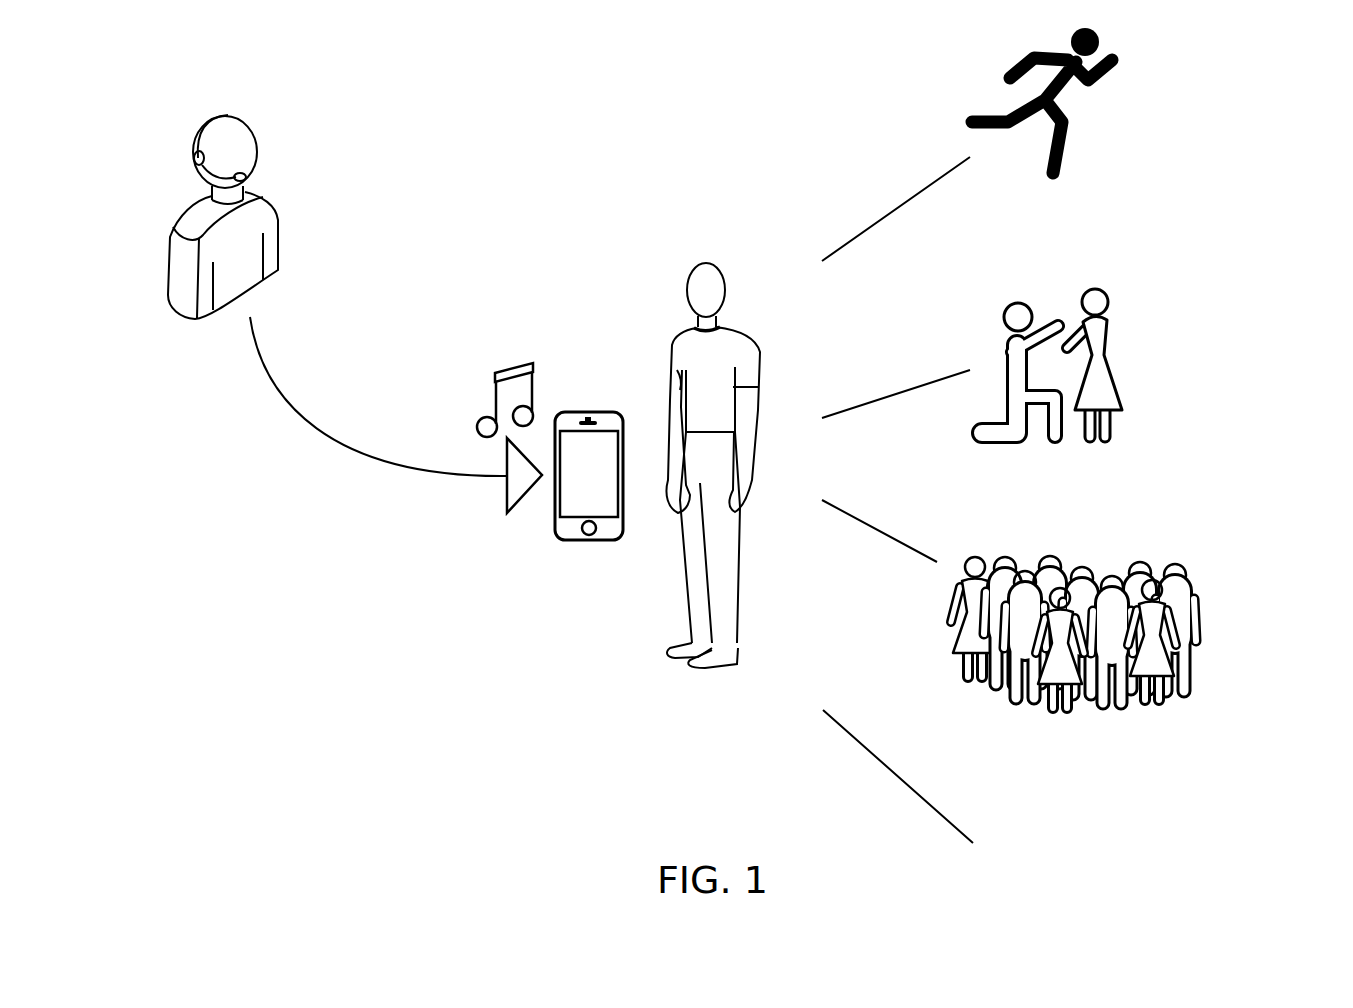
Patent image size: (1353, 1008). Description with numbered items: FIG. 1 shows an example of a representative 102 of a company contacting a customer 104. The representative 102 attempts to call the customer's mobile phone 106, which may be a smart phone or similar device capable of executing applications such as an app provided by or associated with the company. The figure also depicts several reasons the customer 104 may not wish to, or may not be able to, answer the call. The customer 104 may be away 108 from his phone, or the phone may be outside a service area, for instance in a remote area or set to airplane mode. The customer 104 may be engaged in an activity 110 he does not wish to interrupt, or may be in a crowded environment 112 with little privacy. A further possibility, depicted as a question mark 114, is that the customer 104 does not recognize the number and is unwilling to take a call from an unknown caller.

The representative 102 is at (276, 211).
The customer 104 is at (620, 320).
The mobile phone 106 is at (505, 543).
The away 108 is at (1091, 100).
The activity 110 is at (1103, 356).
The crowded environment 112 is at (1128, 628).
The unknown activity 114 is at (1086, 848).